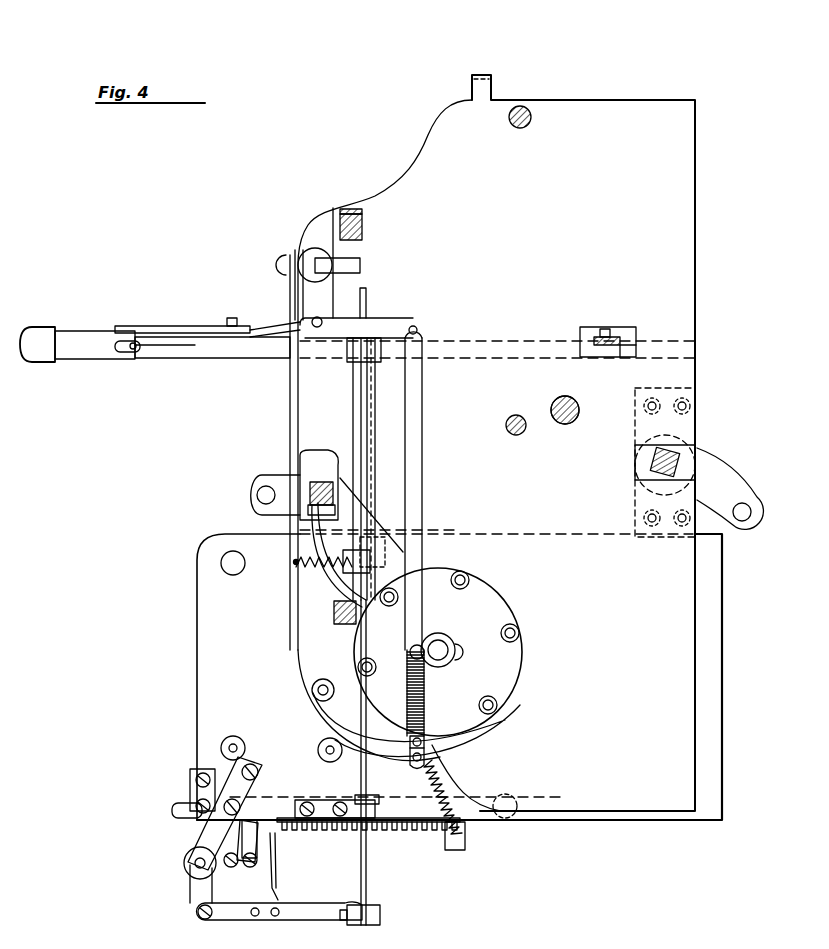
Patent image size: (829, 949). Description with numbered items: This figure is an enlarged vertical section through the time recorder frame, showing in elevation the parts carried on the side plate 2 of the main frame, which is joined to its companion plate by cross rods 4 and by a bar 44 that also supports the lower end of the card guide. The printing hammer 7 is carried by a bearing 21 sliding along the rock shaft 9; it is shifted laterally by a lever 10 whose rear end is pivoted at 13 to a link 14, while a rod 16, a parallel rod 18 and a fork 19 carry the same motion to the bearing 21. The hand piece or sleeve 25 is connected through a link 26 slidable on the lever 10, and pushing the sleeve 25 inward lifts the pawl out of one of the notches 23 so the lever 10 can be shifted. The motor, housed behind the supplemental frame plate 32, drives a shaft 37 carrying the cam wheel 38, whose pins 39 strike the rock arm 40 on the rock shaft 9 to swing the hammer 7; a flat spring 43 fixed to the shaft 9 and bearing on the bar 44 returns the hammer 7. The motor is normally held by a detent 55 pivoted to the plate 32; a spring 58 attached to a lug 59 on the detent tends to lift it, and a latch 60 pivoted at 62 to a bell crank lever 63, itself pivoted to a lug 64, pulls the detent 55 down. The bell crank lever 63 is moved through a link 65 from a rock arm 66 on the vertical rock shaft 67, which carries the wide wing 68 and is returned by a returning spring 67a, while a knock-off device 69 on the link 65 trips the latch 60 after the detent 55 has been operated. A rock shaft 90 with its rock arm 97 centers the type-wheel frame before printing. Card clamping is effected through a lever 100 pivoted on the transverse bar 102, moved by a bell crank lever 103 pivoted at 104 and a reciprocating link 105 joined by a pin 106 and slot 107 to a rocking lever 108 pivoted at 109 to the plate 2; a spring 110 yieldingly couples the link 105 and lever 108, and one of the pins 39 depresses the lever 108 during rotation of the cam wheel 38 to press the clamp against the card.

The side plate 2 is at (492, 443).
The cross rods 4 is at (532, 118).
The hammer 7 is at (352, 267).
The rock shaft 9 is at (334, 495).
The lever 10 is at (216, 350).
The pivot 13 is at (604, 329).
The link 14 is at (614, 336).
The rod 16 is at (566, 424).
The rod 18 is at (257, 495).
The fork 19 is at (300, 483).
The bearing 21 is at (305, 468).
The notches 23 is at (578, 400).
The sleeve 25 is at (93, 350).
The link 26 is at (146, 326).
The side plate 32 is at (708, 678).
The shaft 37 is at (446, 646).
The cam wheel 38 is at (518, 670).
The pins 39 is at (514, 632).
The rock arm 40 is at (400, 556).
The flat spring 43 is at (330, 590).
The bar 44 is at (334, 617).
The detent 55 is at (380, 826).
The spring 58 is at (483, 830).
The lug 59 is at (455, 852).
The latch 60 is at (262, 848).
The pivot 62 is at (258, 866).
The bell crank lever 63 is at (236, 868).
The lug 64 is at (205, 840).
The link 65 is at (298, 915).
The rock arm 66 is at (376, 912).
The rock shaft 67 is at (380, 878).
The returning spring 67a is at (318, 563).
The wing 68 is at (368, 418).
The knock-off device 69 is at (276, 866).
The rock shaft 90 is at (674, 462).
The rock arm 97 is at (724, 490).
The lever 100 is at (355, 213).
The bar 102 is at (364, 228).
The bell crank lever 103 is at (313, 300).
The pivot 104 is at (318, 320).
The link 105 is at (423, 440).
The pin 106 is at (426, 742).
The slot 107 is at (413, 758).
The rocking lever 108 is at (478, 724).
The pivot 109 is at (312, 690).
The spring 110 is at (425, 687).